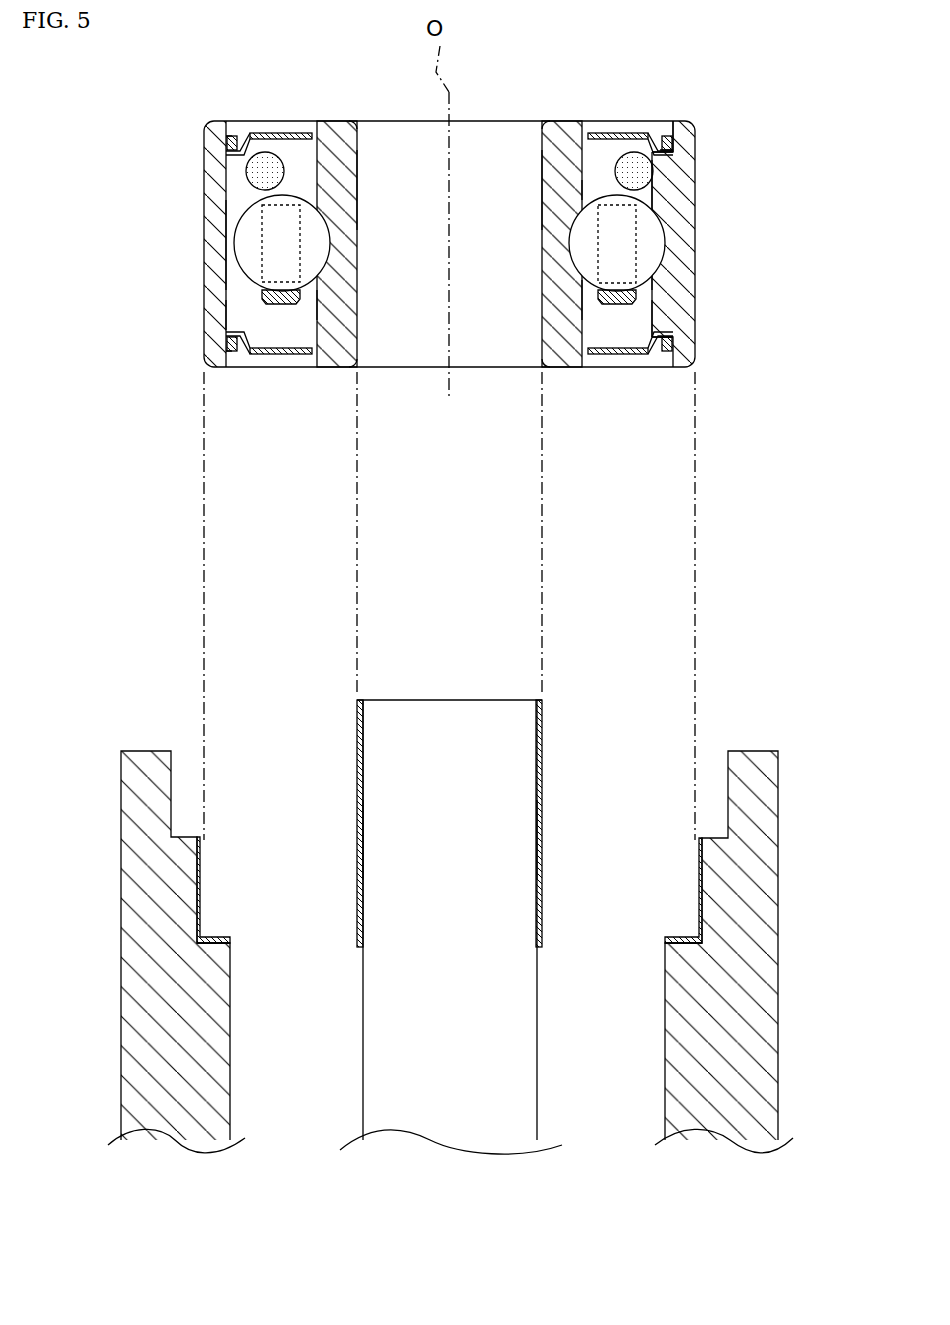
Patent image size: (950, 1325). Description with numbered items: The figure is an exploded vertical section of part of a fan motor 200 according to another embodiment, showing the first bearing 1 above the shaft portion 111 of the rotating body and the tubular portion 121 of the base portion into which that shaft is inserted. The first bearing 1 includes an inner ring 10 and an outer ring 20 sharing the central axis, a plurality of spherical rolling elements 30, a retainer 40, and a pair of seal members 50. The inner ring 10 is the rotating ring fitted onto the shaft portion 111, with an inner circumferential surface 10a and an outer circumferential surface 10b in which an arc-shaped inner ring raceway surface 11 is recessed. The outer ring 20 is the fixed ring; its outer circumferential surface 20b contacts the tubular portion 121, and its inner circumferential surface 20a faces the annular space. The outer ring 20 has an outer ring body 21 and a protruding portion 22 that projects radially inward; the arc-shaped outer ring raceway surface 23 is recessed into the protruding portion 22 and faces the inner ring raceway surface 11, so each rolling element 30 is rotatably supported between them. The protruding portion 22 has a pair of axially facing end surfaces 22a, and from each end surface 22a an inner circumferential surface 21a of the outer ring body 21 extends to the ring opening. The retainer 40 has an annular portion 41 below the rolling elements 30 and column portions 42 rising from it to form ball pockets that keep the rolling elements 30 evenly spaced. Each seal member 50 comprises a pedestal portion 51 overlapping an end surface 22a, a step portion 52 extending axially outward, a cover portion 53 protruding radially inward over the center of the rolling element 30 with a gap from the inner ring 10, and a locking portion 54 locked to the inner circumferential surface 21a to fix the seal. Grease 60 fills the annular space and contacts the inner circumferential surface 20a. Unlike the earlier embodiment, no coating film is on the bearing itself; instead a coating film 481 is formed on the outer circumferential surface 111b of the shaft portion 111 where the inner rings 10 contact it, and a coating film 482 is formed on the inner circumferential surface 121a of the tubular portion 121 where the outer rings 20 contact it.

The first bearing 1 is at (735, 108).
The inner ring 10 is at (538, 160).
The inner circumferential surface of the inner ring 10a is at (357, 212).
The outer circumferential surface of the inner ring 10b is at (317, 300).
The inner ring raceway surface 11 is at (590, 285).
The outer ring 20 is at (703, 172).
The inner circumferential surface of the outer ring 20a is at (253, 330).
The outer circumferential surface of the outer ring 20b is at (230, 300).
The outer ring body 21 is at (685, 135).
The inner circumferential surface of the outer ring body 21a is at (666, 138).
The protruding portion 22 is at (650, 313).
The end surface 22a is at (656, 148).
The outer ring raceway surface 23 is at (655, 258).
The rolling element 30 is at (650, 228).
The retainer 40 is at (248, 292).
The annular portion 41 is at (278, 300).
The column portion 42 is at (265, 240).
The seal member 50 is at (275, 124).
The pedestal portion 51 is at (233, 137).
The step portion 52 is at (246, 140).
The cover portion 53 is at (293, 133).
The locking portion 54 is at (228, 141).
The grease 60 is at (258, 172).
The shaft portion 111 is at (455, 707).
The outer circumferential surface of the shaft portion 111b is at (357, 843).
The tubular portion 121 is at (135, 978).
The inner circumferential surface of the tubular portion 121a is at (200, 922).
The coating film 481 is at (357, 805).
The coating film 482 is at (200, 885).
The fan motor 200 is at (755, 60).